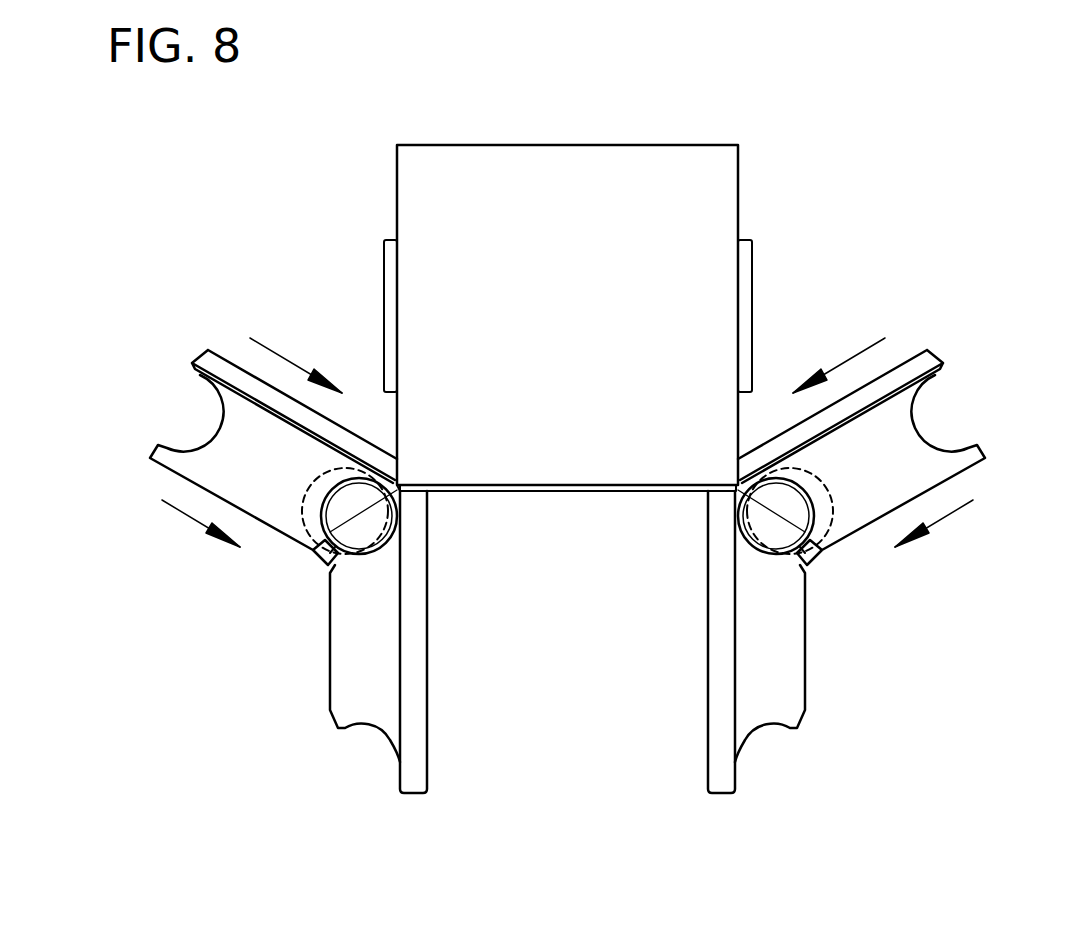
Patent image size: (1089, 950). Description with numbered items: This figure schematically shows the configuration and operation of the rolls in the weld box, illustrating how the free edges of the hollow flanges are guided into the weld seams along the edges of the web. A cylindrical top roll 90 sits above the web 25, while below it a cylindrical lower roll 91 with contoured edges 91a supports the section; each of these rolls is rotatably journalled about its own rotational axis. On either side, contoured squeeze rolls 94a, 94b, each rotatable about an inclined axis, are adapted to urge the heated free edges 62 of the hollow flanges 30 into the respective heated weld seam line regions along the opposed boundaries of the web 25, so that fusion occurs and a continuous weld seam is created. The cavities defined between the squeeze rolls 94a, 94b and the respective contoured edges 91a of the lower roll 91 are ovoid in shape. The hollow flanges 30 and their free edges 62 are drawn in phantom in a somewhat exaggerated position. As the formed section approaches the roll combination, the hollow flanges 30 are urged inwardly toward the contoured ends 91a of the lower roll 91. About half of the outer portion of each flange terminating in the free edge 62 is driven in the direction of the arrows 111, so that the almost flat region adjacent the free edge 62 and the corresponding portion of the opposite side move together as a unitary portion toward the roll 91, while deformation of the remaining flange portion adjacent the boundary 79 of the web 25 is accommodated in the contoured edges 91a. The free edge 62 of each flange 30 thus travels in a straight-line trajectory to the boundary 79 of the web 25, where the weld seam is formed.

The cylindrical top roll 90 is at (613, 185).
The web 25 is at (572, 491).
The cylindrical lower roll 91 is at (413, 793).
The contoured edges 91a is at (378, 739).
The arrows 111 is at (285, 360).
The contoured squeeze roll 94a is at (263, 528).
The contoured squeeze roll 94b is at (912, 440).
The hollow flanges 30 is at (302, 482).
The free edges 62 is at (335, 547).
The boundary 79 is at (400, 490).